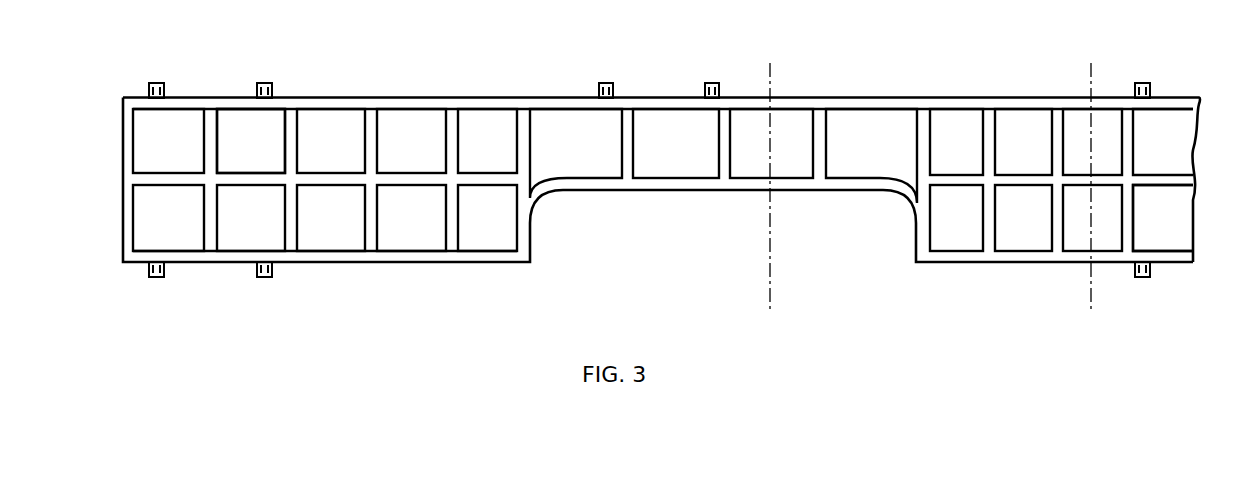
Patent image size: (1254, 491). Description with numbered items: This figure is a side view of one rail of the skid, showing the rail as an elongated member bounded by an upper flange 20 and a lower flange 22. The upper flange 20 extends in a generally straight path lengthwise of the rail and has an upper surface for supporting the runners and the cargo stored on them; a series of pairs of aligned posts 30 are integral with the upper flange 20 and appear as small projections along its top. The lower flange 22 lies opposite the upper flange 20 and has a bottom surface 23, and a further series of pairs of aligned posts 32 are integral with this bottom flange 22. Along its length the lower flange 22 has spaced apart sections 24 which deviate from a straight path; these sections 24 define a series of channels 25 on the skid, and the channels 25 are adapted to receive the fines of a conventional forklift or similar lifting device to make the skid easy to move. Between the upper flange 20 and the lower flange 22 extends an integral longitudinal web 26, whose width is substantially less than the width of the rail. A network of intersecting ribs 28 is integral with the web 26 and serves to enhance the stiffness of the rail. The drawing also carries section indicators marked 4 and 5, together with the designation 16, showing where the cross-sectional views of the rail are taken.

The tray frame 16 is at (963, 97).
The upper flange 20 is at (352, 97).
The lower flange 22 is at (320, 258).
The bottom surface 23 is at (952, 257).
The spaced apart sections 24 is at (667, 182).
The channels 25 is at (609, 242).
The longitudinal web 26 is at (487, 232).
The intersecting ribs 28 is at (282, 149).
The aligned posts 30 is at (271, 83).
The aligned posts 32 is at (255, 272).
The section line 4- 4 is at (812, 63).
The section line 5- 5 is at (1130, 63).